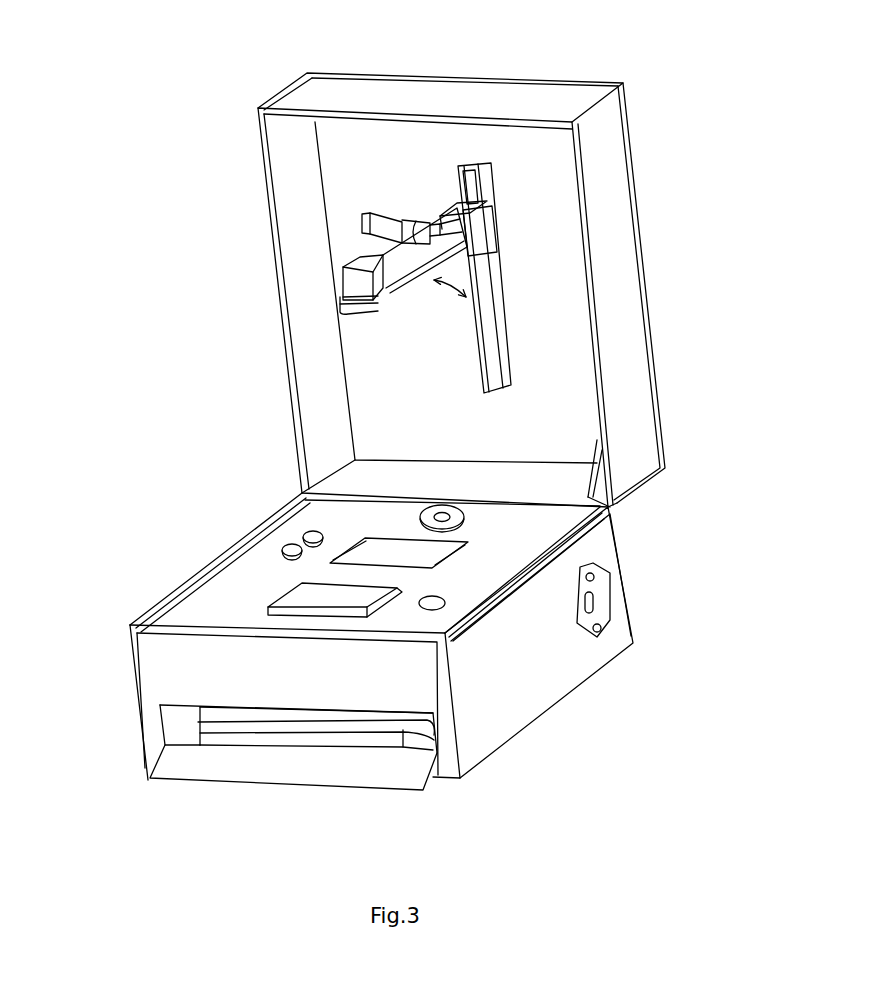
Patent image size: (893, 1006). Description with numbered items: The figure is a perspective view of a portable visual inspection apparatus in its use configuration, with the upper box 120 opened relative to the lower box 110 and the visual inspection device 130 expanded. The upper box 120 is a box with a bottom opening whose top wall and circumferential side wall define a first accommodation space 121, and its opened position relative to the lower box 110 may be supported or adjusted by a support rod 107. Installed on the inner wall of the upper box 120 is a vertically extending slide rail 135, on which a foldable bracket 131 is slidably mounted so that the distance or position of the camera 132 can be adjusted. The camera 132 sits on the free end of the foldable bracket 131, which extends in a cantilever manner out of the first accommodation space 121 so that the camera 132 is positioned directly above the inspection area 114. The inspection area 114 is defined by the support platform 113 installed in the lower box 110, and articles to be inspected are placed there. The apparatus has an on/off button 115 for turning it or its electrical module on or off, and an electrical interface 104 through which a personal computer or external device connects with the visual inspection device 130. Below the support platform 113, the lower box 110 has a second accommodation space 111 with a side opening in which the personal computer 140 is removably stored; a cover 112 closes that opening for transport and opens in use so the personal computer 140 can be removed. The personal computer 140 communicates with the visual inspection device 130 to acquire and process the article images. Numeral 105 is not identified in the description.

The electrical interface 104 is at (615, 585).
The rectangular recess 105 is at (430, 558).
The support rod 107 is at (608, 470).
The lower box 110 is at (518, 691).
The second accommodation space 111 is at (183, 716).
The cover 112 is at (405, 777).
The support platform 113 is at (215, 605).
The inspection area 114 is at (362, 536).
The on/off button 115 is at (290, 545).
The upper box 120 is at (613, 282).
The first accommodation space 121 is at (489, 143).
The visual inspection device 130 is at (364, 325).
The foldable bracket 131 is at (411, 297).
The camera 132 is at (360, 262).
The slide rail 135 is at (504, 330).
The personal computer 140 is at (303, 738).